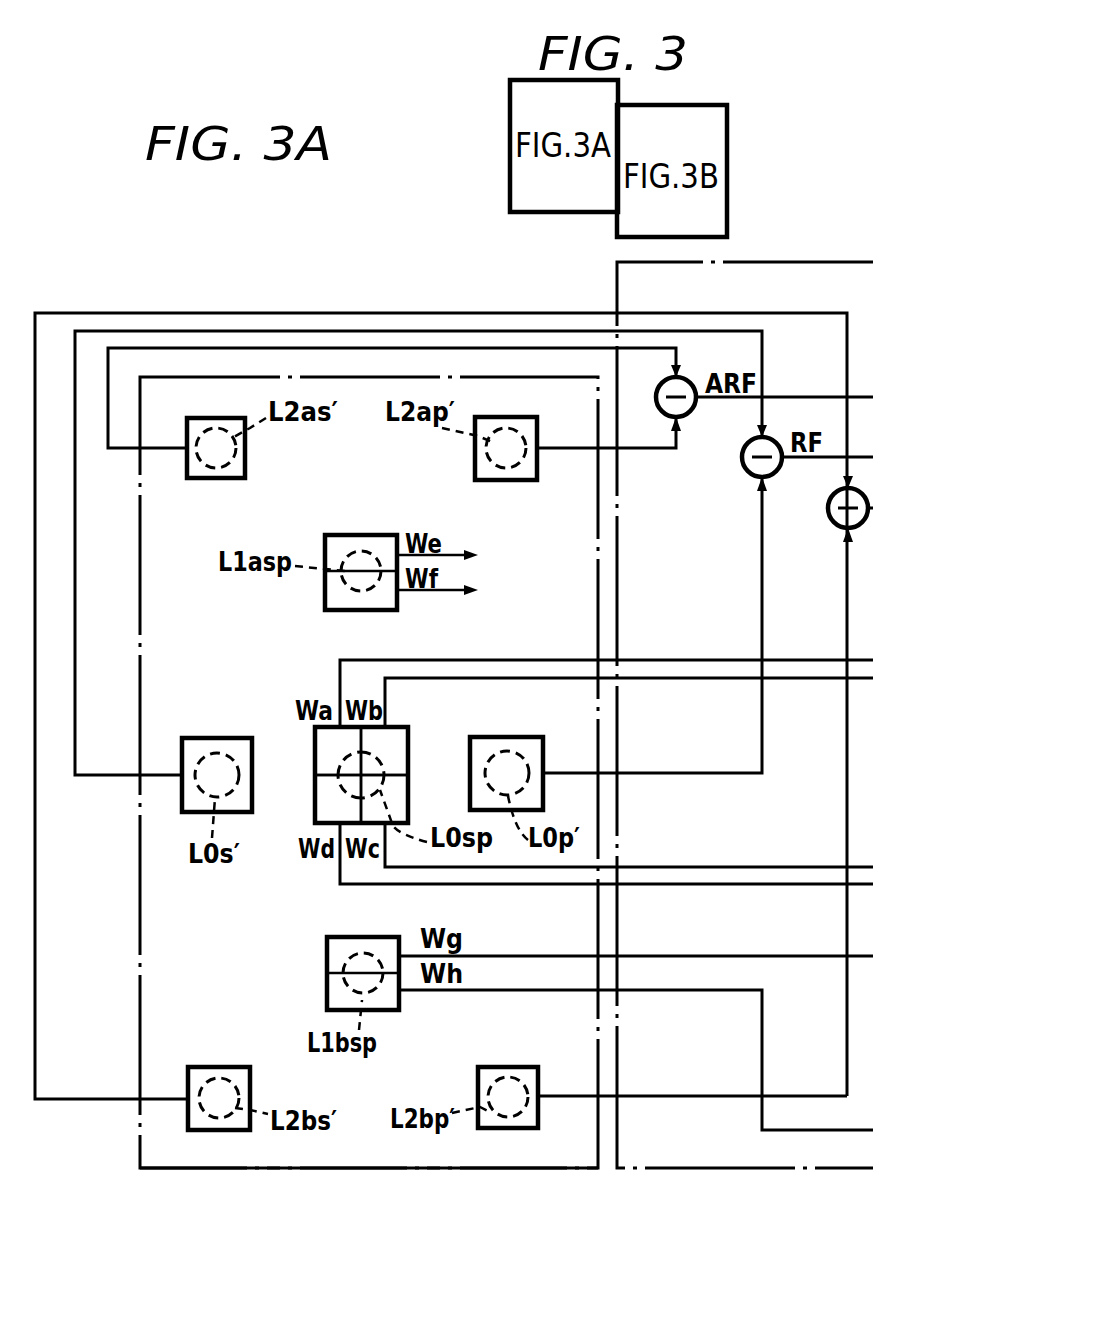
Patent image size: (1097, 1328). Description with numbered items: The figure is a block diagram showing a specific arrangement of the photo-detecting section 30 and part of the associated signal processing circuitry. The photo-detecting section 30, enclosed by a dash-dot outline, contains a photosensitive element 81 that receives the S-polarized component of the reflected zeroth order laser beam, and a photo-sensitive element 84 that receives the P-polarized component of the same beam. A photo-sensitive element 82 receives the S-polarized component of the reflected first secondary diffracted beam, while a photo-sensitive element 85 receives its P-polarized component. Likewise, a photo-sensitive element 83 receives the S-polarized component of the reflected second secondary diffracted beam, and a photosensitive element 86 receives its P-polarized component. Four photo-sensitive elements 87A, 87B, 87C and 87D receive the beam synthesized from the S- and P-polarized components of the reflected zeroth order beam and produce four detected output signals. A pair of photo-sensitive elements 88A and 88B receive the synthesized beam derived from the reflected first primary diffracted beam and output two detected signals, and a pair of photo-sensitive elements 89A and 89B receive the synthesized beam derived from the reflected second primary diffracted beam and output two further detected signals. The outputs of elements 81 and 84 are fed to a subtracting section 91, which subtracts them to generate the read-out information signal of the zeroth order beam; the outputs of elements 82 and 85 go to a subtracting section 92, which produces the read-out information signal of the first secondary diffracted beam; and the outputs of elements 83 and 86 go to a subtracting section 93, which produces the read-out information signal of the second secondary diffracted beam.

The photo-detecting section 30 is at (338, 1170).
The photosensitive element 81 is at (197, 740).
The photo-sensitive element 82 is at (245, 470).
The photo-sensitive element 83 is at (197, 1068).
The photo-sensitive element 84 is at (540, 740).
The photo-sensitive element 85 is at (520, 480).
The photosensitive element 86 is at (480, 1068).
The photo-sensitive element 87A is at (315, 757).
The photo-sensitive element 87B is at (412, 732).
The photo-sensitive element 87C is at (400, 802).
The photo-sensitive element 87D is at (323, 803).
The photo-sensitive element 88A is at (325, 545).
The photo-sensitive element 88B is at (325, 597).
The photo-sensitive element 89A is at (327, 952).
The photo-sensitive element 89B is at (327, 990).
The subtracting section 91 is at (748, 472).
The subtracting section 92 is at (690, 412).
The subtracting section 93 is at (834, 522).